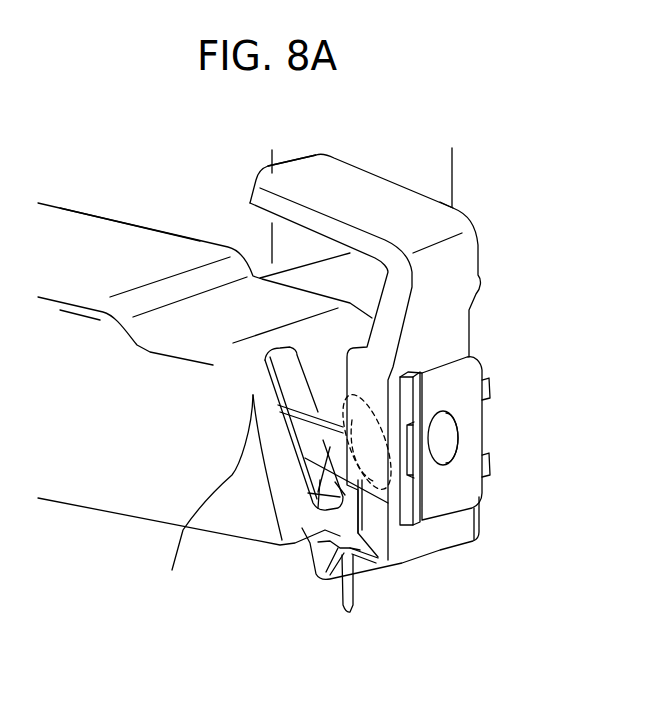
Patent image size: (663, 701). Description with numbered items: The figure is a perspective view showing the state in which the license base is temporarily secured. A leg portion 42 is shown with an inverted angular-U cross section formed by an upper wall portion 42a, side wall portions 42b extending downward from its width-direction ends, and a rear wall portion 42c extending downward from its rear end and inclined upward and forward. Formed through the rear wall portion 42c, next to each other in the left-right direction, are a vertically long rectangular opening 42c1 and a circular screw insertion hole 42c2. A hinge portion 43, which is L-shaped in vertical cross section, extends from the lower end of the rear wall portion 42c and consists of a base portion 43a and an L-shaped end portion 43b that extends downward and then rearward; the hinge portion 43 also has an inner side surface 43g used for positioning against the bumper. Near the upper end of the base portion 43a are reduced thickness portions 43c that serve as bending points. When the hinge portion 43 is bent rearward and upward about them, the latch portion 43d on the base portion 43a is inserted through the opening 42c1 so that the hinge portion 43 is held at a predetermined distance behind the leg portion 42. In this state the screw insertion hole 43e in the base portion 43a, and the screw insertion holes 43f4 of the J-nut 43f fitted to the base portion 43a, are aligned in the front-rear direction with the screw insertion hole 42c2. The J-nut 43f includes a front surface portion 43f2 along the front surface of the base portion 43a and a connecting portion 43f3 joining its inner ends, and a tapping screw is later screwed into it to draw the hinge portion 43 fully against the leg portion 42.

The leg portion 42 is at (68, 507).
The upper wall portion 42a is at (80, 222).
The side wall portion 42b is at (143, 485).
The rear wall portion 42c is at (172, 570).
The opening 42c1 is at (288, 452).
The screw insertion hole 42c2 is at (375, 490).
The hinge portion 43 is at (483, 308).
The base portion 43a is at (470, 519).
The end portion 43b is at (368, 178).
The reduced thickness portion 43c is at (343, 582).
The latch portion 43d is at (322, 510).
The screw insertion hole 43e is at (440, 435).
The J-nut 43f is at (467, 412).
The front surface portion 43f2 is at (467, 372).
The connecting portion 43f3 is at (490, 468).
The screw insertion hole 43f4 is at (458, 438).
The side surface 43g is at (420, 194).